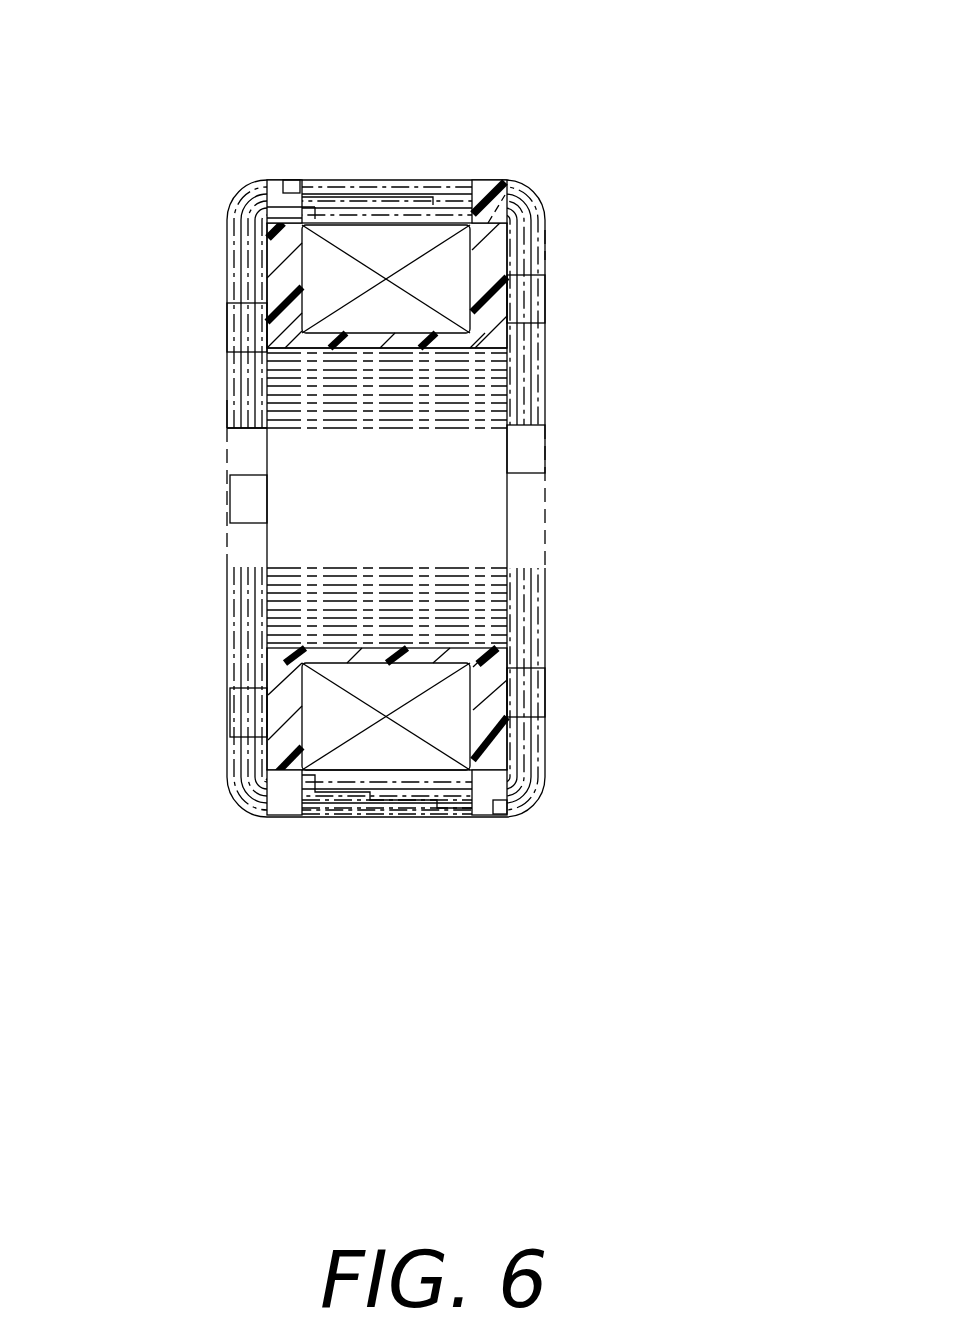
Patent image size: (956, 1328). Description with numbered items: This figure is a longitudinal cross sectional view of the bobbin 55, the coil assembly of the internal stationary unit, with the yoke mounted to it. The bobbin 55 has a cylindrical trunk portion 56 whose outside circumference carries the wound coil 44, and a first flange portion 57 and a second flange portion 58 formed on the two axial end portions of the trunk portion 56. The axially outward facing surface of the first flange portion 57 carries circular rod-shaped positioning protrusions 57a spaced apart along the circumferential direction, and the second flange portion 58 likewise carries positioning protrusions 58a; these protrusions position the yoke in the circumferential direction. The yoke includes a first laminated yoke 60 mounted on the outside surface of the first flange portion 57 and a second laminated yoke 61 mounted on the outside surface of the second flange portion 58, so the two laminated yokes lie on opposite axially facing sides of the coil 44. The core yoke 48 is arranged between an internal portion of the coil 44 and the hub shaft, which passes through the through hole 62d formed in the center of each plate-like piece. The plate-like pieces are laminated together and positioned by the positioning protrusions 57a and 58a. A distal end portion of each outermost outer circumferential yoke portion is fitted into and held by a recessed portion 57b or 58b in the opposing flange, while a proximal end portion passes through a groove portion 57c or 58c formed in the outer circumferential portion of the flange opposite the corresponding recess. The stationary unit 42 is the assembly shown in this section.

The stator 42 is at (556, 308).
The coil 44 is at (362, 233).
The core yoke 48 is at (468, 378).
The bobbin 55 is at (548, 110).
The cylindrical trunk portion 56 is at (420, 350).
The first flange portion 57 is at (265, 238).
The positioning protrusions 57a is at (230, 293).
The recessed portion 57b is at (297, 179).
The groove portion 57c is at (265, 188).
The second flange portion 58 is at (507, 235).
The positioning protrusions 58a is at (545, 690).
The recessed portion 58b is at (478, 178).
The groove portion 58c is at (498, 200).
The first laminated yoke 60 is at (265, 241).
The second laminated yoke 61 is at (547, 240).
The through hole 62d is at (248, 430).